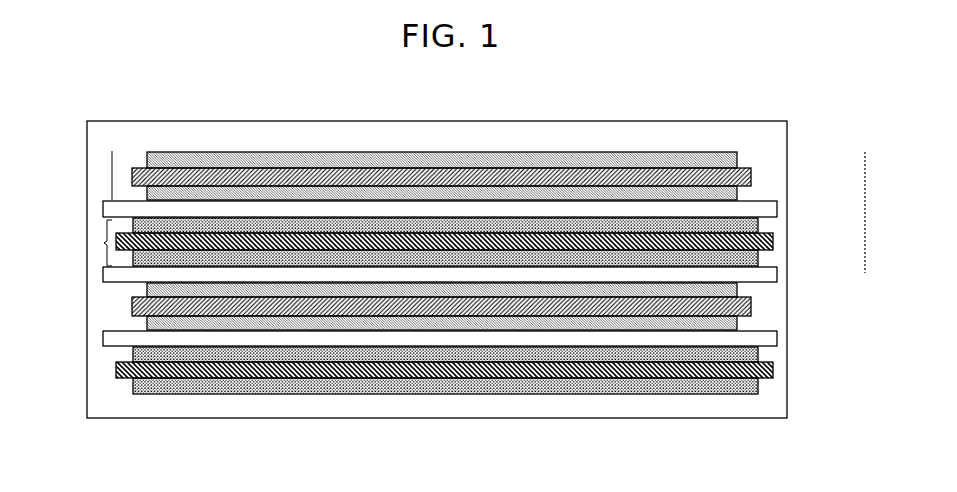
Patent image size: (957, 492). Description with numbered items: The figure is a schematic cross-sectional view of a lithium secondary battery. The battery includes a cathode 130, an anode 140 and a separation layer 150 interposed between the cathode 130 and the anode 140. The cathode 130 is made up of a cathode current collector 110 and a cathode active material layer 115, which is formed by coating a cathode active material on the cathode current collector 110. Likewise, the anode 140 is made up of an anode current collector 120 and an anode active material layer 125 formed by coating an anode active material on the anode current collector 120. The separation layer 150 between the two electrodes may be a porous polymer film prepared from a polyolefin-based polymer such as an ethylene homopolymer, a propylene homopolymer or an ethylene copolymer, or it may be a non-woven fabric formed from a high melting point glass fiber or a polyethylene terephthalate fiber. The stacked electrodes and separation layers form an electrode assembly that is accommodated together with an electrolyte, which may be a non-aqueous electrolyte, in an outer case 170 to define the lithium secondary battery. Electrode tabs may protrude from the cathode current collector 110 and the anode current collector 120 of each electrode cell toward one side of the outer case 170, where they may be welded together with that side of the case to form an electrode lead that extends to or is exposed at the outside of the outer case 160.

The cathode current collector 110 is at (751, 172).
The cathode active material layer 115 is at (737, 156).
The anode current collector 120 is at (773, 240).
The anode active material layer 125 is at (758, 226).
The cathode 130 is at (110, 169).
The anode 140 is at (106, 254).
The separation layer 150 is at (102, 213).
The outer case 160 is at (865, 212).
The outer case 170 is at (208, 418).